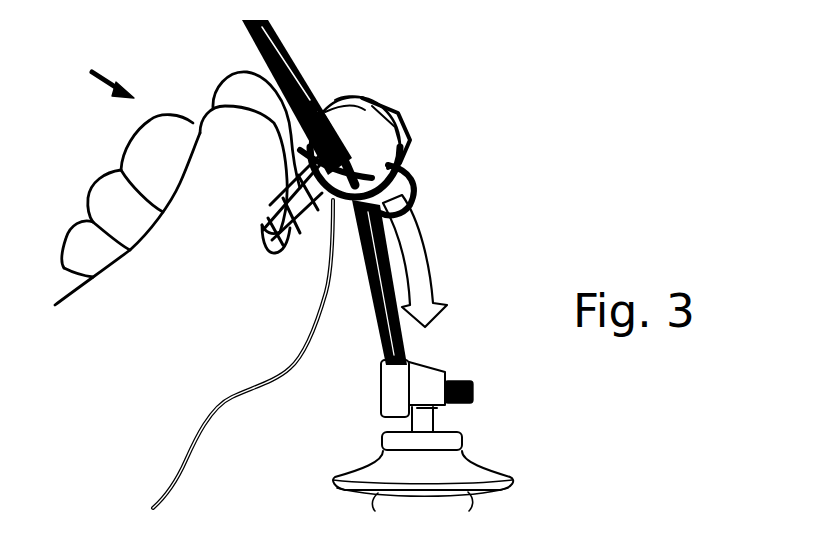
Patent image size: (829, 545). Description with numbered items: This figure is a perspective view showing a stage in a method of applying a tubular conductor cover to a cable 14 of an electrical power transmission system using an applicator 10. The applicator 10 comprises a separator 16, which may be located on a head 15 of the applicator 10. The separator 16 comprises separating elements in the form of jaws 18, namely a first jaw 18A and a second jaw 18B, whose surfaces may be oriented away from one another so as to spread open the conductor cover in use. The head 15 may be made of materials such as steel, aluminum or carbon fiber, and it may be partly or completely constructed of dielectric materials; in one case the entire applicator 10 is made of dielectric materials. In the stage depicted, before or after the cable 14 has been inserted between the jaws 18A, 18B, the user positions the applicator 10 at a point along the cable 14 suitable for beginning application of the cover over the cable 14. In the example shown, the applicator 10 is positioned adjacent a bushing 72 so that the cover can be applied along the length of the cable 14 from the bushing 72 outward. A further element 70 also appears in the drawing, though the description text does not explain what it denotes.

The applicator 10 is at (396, 114).
The cable 14 is at (262, 45).
The head 15 is at (424, 218).
The separator 16 is at (363, 99).
The jaws 18 is at (393, 171).
The first jaw 18A is at (380, 164).
The second jaw 18B is at (343, 100).
The cord 70 is at (160, 438).
The bushing 72 is at (473, 465).